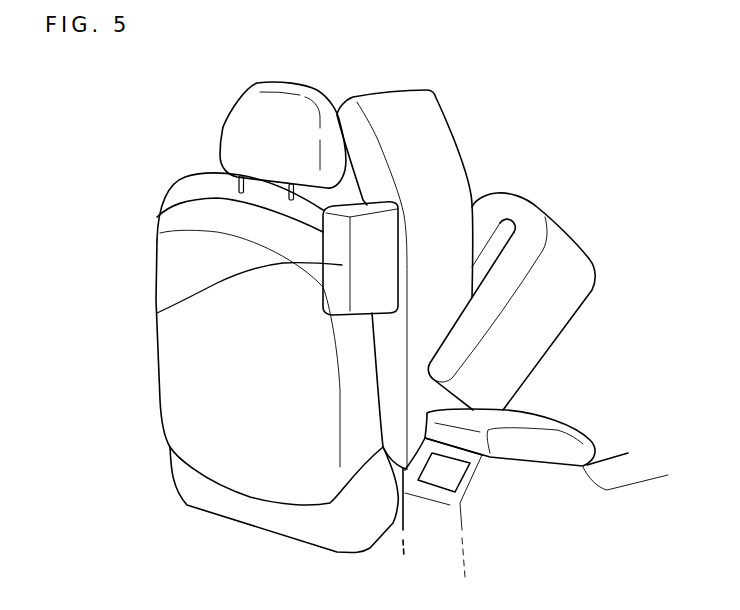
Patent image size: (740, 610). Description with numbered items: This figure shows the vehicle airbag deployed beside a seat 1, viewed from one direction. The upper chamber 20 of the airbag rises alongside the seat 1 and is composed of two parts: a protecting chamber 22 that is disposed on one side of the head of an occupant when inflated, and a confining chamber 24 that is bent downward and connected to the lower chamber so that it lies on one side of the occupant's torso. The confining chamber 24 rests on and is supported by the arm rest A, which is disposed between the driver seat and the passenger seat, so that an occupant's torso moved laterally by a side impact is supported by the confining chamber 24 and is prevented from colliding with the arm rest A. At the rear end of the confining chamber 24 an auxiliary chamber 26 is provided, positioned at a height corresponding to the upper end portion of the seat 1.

The seat 1 is at (193, 374).
The upper chamber 20 is at (600, 75).
The protecting chamber 22 is at (440, 140).
The confining chamber 24 is at (557, 260).
The auxiliary chamber 26 is at (157, 313).
The arm rest A is at (557, 432).